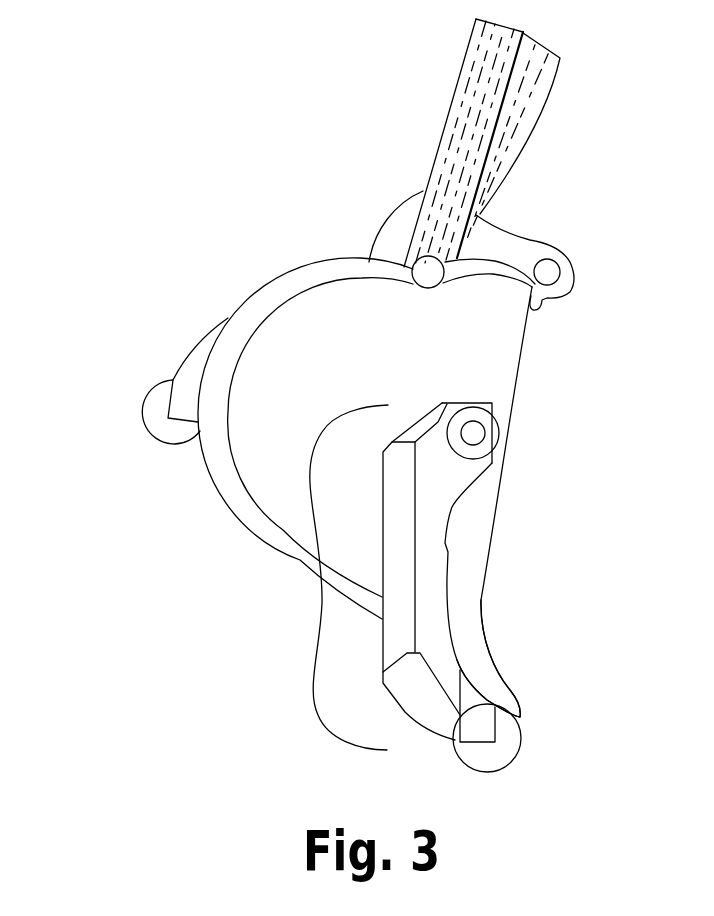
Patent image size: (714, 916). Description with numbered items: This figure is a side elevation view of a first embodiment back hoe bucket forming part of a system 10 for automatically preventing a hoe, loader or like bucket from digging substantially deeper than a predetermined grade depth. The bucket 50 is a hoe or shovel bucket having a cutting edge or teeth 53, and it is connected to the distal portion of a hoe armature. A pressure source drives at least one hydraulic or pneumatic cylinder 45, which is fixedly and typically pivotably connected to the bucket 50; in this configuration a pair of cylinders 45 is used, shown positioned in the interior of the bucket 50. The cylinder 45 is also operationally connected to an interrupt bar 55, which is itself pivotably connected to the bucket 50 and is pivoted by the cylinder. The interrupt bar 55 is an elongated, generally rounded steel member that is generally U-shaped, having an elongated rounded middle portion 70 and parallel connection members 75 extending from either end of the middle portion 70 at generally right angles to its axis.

The system 10 is at (145, 559).
The hydraulic cylinder 45 is at (470, 153).
The bucket 50 is at (500, 362).
The cutting edge 53 is at (514, 699).
The interrupt bar 55 is at (309, 566).
The middle portion 70 is at (522, 753).
The connection members 75 is at (432, 617).